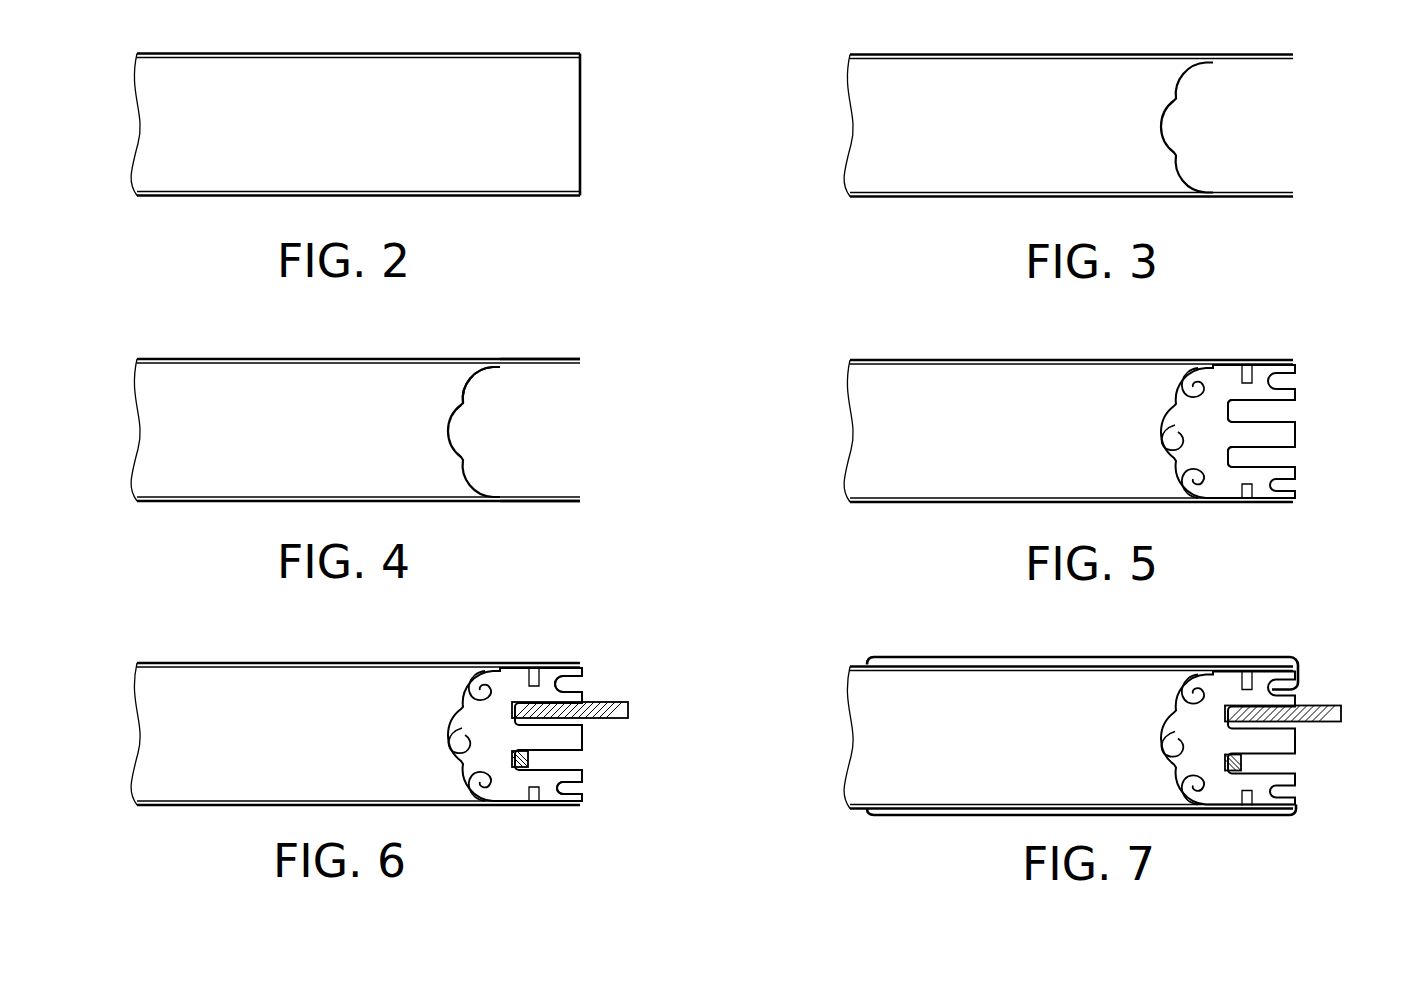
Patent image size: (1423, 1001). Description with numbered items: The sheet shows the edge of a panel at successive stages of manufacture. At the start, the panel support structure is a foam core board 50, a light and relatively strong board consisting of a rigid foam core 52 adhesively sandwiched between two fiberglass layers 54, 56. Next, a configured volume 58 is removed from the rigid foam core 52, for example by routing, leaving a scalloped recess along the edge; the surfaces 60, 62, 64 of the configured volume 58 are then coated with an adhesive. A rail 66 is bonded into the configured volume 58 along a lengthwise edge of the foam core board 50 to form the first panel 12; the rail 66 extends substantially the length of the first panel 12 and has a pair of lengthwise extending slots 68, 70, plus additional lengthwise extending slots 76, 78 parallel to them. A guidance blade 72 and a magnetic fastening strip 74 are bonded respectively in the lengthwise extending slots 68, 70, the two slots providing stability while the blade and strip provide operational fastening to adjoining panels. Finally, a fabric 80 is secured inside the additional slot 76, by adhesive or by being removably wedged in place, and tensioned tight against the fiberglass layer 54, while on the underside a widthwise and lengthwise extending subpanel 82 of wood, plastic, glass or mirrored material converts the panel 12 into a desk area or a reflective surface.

In FIG. 5, the first panel 12 is at (1070, 407).
In FIG. 6, the first panel 12 is at (409, 726).
In FIG. 7, the first panel 12 is at (1079, 732).
In FIG. 2, the foam core board 50 is at (417, 131).
In FIG. 3, the foam core board 50 is at (1056, 135).
In FIG. 4, the foam core board 50 is at (416, 429).
In FIG. 2, the rigid foam core 52 is at (362, 131).
In FIG. 3, the rigid foam core 52 is at (1042, 131).
In FIG. 4, the rigid foam core 52 is at (362, 437).
In FIG. 5, the rigid foam core 52 is at (1042, 437).
In FIG. 6, the rigid foam core 52 is at (342, 749).
In FIG. 7, the rigid foam core 52 is at (1045, 749).
In FIG. 2, the fiberglass layer 54 is at (374, 53).
In FIG. 3, the fiberglass layer 54 is at (1052, 53).
In FIG. 4, the fiberglass layer 54 is at (371, 357).
In FIG. 5, the fiberglass layer 54 is at (1071, 362).
In FIG. 6, the fiberglass layer 54 is at (257, 661).
In FIG. 7, the fiberglass layer 54 is at (855, 666).
In FIG. 2, the fiberglass layer 56 is at (208, 197).
In FIG. 3, the fiberglass layer 56 is at (890, 197).
In FIG. 4, the fiberglass layer 56 is at (208, 500).
In FIG. 5, the fiberglass layer 56 is at (1071, 500).
In FIG. 6, the fiberglass layer 56 is at (243, 805).
In FIG. 7, the fiberglass layer 56 is at (855, 812).
In FIG. 3, the configured volume 58 is at (1288, 107).
In FIG. 4, the configured volume 58 is at (546, 432).
In FIG. 4, the surface of the configured volume 60 is at (547, 363).
In FIG. 4, the surface of the configured volume 62 is at (481, 373).
In FIG. 4, the surface of the configured volume 64 is at (533, 495).
In FIG. 5, the rail 66 is at (1227, 444).
In FIG. 6, the rail 66 is at (510, 748).
In FIG. 7, the rail 66 is at (1230, 749).
In FIG. 5, the lengthwise extending slot 68 is at (1306, 407).
In FIG. 5, the lengthwise extending slot 70 is at (1308, 458).
In FIG. 6, the guidance blade 72 is at (630, 706).
In FIG. 7, the guidance blade 72 is at (1343, 712).
In FIG. 6, the magnetic fastening strip 74 is at (530, 760).
In FIG. 7, the magnetic fastening strip 74 is at (1247, 762).
In FIG. 6, the lengthwise extending additional slot 76 is at (602, 683).
In FIG. 6, the lengthwise extending additional slot 78 is at (602, 787).
In FIG. 7, the fabric 80 is at (1097, 656).
In FIG. 7, the subpanel 82 is at (1200, 818).